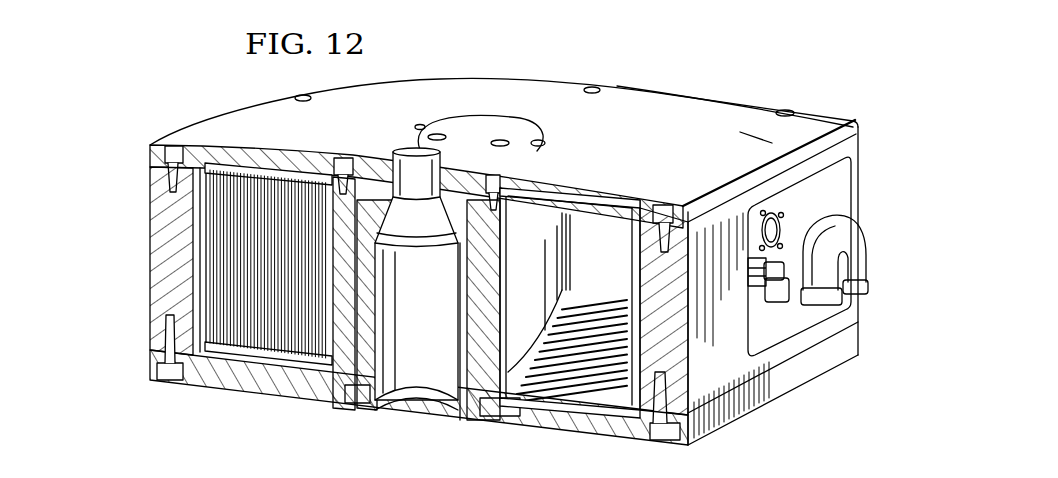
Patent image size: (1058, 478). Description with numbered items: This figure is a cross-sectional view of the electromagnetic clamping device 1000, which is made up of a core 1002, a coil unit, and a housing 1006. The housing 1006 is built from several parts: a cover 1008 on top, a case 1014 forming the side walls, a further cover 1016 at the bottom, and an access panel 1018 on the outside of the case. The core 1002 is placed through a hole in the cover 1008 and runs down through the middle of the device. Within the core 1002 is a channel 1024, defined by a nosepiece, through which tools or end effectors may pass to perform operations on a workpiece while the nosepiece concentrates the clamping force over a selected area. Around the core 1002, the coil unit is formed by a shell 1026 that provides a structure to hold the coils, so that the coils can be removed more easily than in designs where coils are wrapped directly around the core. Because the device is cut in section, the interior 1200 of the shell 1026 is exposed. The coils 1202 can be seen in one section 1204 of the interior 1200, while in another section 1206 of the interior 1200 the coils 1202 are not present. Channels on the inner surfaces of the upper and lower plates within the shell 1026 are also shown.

The electromagnetic clamping device 1000 is at (714, 55).
The core 1002 is at (534, 127).
The housing 1006 is at (557, 72).
The cover 1008 is at (224, 124).
The case 1014 is at (158, 240).
The cover 1016 is at (225, 380).
The access panel 1018 is at (767, 320).
The channel 1024 is at (412, 158).
The shell 1026 is at (614, 212).
The interior 1200 is at (583, 370).
The coils 1202 is at (230, 298).
The section 1204 is at (283, 160).
The section 1206 is at (546, 222).